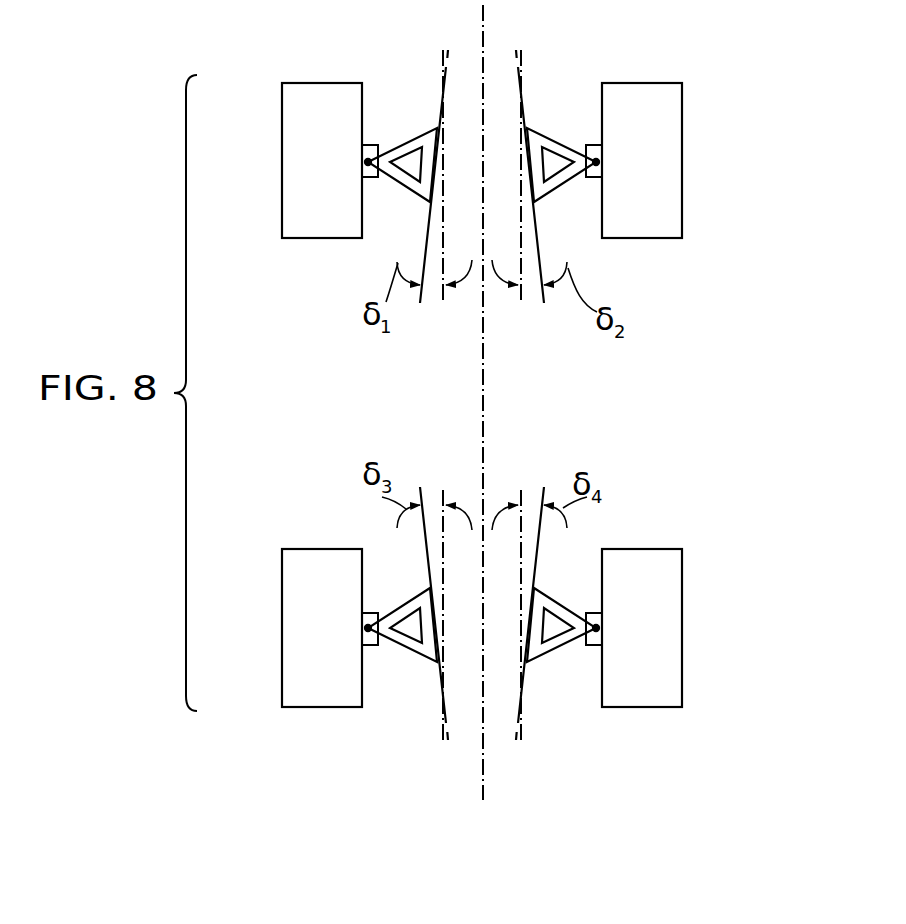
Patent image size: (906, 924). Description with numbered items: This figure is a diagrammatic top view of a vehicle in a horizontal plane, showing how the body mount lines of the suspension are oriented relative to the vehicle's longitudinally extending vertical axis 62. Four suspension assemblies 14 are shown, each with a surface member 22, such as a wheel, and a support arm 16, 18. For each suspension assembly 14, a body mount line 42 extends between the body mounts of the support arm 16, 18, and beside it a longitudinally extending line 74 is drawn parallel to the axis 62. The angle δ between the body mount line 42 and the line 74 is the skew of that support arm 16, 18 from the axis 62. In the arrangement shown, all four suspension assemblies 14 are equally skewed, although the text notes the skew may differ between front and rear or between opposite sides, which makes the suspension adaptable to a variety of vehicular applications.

The suspension assembly 14 is at (397, 96).
The support arm 16 is at (489, 395).
The support arm 18 is at (407, 188).
The surface member 22 is at (282, 142).
The body mount line 42 is at (446, 67).
The longitudinally extending vertical axis 62 is at (483, 362).
The longitudinally extending line 74 is at (443, 297).